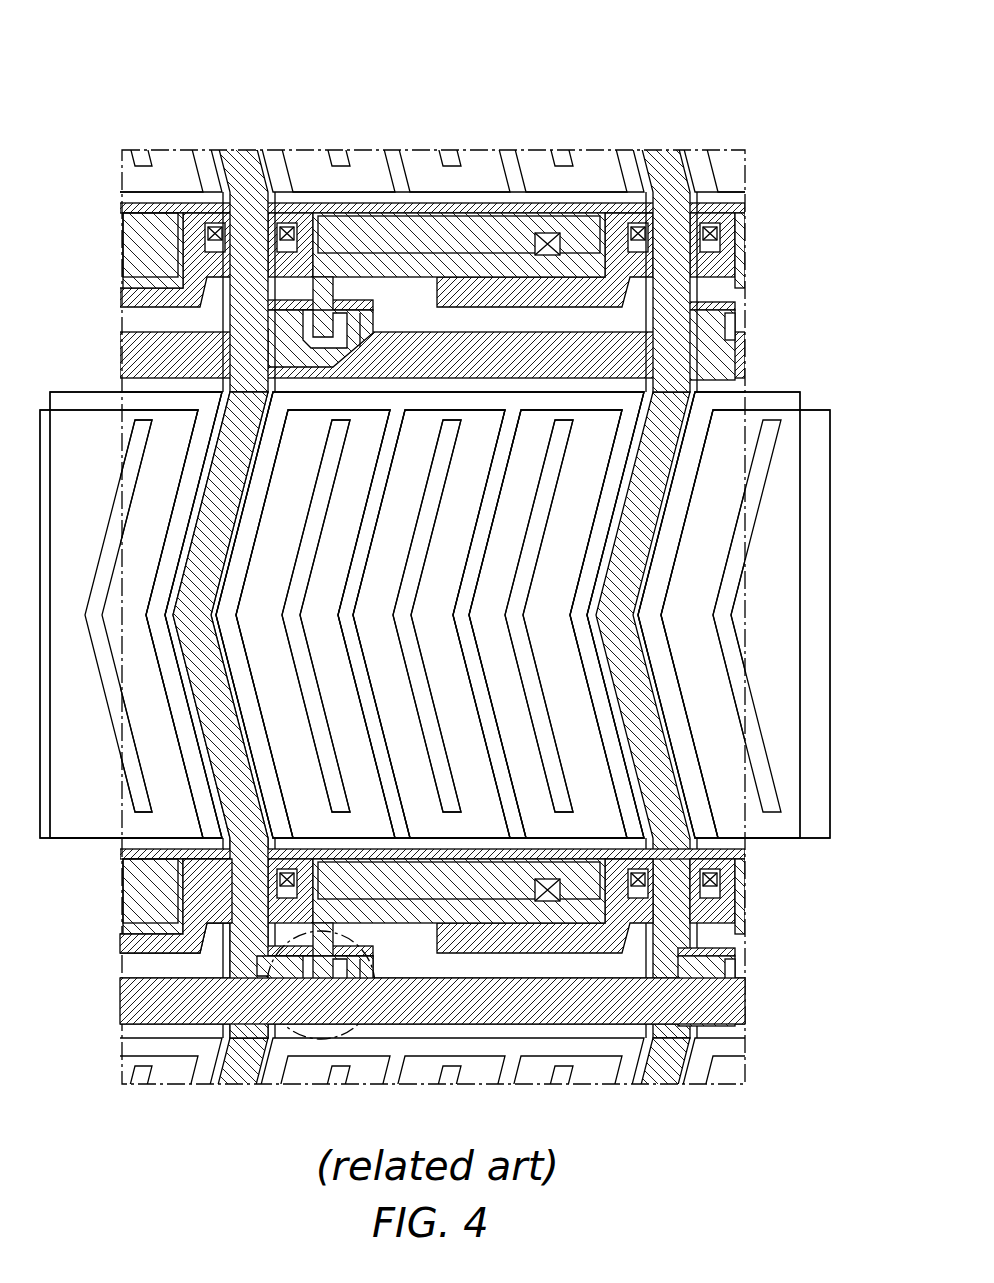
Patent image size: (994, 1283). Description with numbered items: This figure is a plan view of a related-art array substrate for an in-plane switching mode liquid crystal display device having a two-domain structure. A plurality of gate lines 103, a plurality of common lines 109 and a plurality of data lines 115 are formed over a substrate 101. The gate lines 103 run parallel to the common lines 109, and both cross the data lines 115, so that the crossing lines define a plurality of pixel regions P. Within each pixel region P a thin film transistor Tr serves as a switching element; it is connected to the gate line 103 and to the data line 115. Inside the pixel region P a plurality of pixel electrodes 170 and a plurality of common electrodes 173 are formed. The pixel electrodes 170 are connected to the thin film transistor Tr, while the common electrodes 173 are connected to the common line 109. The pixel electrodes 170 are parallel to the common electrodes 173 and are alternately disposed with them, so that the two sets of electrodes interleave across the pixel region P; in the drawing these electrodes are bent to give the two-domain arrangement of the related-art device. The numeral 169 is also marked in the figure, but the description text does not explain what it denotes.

The substrate 101 is at (549, 130).
The pixel region P is at (592, 461).
The pixel electrode 170 is at (536, 572).
The common electrode 173 is at (468, 578).
The data line 115 is at (232, 718).
The contact hole 169 is at (502, 832).
The common line 109 is at (205, 898).
The thin film transistor Tr is at (322, 1042).
The gate line 103 is at (482, 1016).